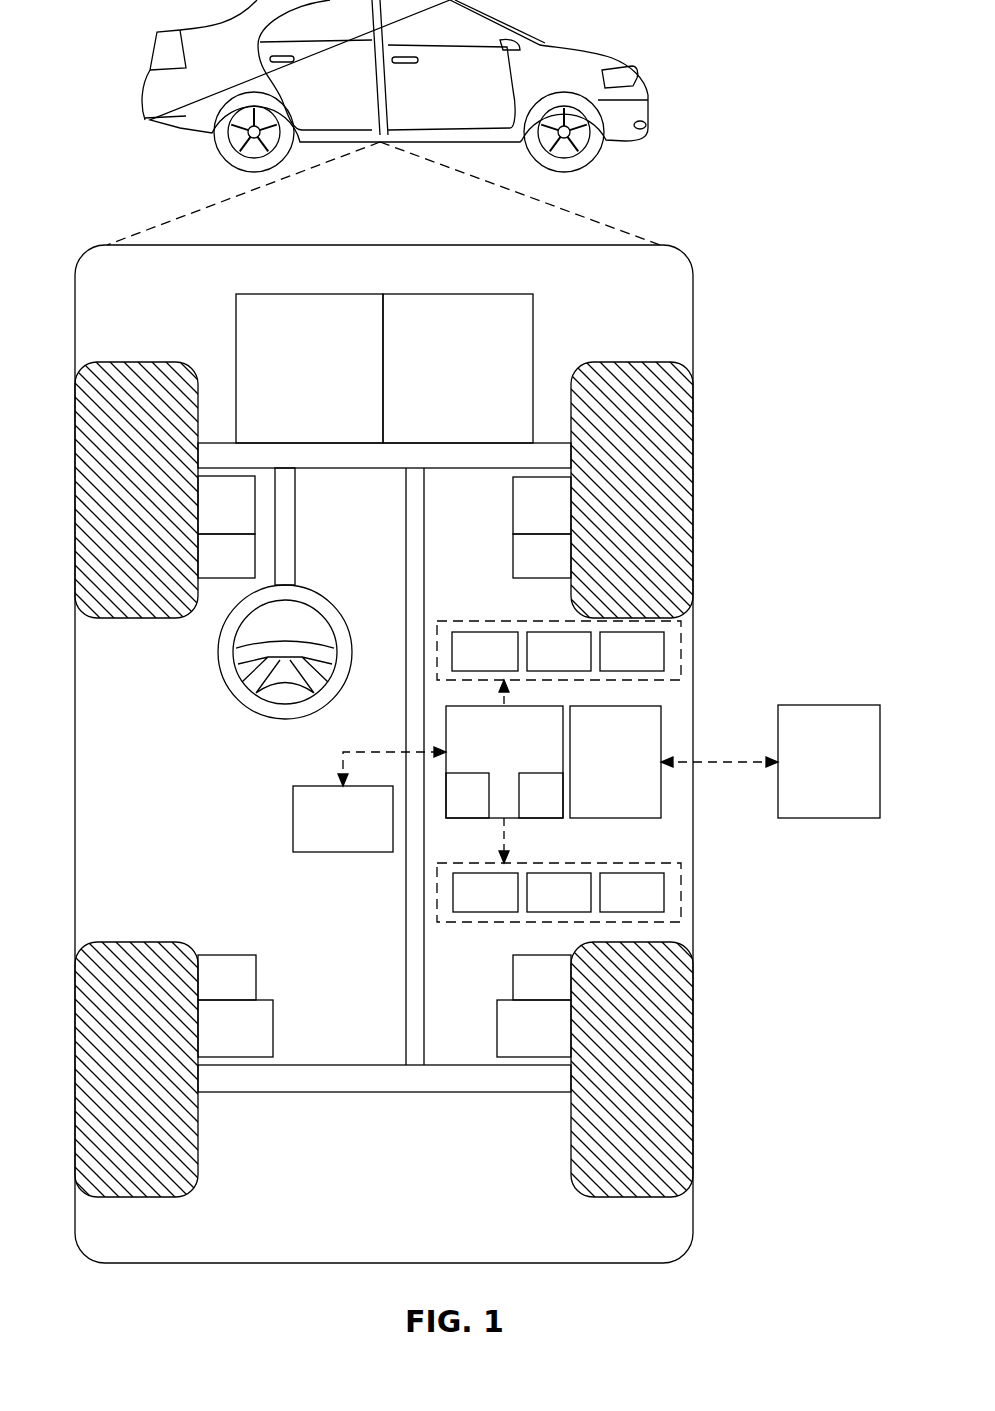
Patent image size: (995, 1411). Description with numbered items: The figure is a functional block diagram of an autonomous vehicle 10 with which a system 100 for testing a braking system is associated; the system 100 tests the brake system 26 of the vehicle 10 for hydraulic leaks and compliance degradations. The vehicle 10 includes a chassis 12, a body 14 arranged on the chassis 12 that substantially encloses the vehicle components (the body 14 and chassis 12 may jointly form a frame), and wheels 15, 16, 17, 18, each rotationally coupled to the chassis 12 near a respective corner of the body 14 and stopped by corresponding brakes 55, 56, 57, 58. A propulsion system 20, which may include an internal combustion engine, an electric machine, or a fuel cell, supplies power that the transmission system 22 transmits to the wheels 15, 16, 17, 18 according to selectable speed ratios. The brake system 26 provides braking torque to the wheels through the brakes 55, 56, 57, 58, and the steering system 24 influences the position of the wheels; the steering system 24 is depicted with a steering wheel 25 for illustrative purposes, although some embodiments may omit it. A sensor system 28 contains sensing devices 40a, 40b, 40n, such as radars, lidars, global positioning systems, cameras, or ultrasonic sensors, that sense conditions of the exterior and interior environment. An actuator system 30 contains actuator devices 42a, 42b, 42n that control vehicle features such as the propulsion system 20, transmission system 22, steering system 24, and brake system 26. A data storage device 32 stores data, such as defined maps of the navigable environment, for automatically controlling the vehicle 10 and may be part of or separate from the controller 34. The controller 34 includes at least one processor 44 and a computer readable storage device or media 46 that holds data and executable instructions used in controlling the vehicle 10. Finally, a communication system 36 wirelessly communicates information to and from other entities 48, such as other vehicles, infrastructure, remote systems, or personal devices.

The vehicle 10 is at (155, 63).
The system 100 is at (746, 228).
The chassis 12 is at (292, 1092).
The body 14 is at (75, 717).
The wheel 15 is at (138, 362).
The wheel 16 is at (632, 362).
The wheel 17 is at (138, 1197).
The wheel 18 is at (632, 1197).
The propulsion system 20 is at (294, 380).
The transmission system 22 is at (443, 380).
The steering system 24 is at (306, 540).
The steering wheel 25 is at (262, 715).
The brake system 26 is at (211, 517).
The sensor system 28 is at (495, 620).
The actuator system 30 is at (482, 925).
The data storage device 32 is at (328, 833).
The controller 34 is at (489, 756).
The communication system 36 is at (600, 776).
The sensing device 40a is at (464, 665).
The sensing device 40b is at (538, 665).
The sensing device 40n is at (611, 665).
The actuator device 42a is at (464, 906).
The actuator device 42b is at (538, 906).
The actuator device 42n is at (611, 906).
The processor 44 is at (452, 810).
The computer readable storage device or media 46 is at (526, 810).
The other entities 48 is at (814, 776).
The brake 55 is at (211, 570).
The brake 56 is at (527, 570).
The brake 57 is at (212, 991).
The brake 58 is at (527, 991).